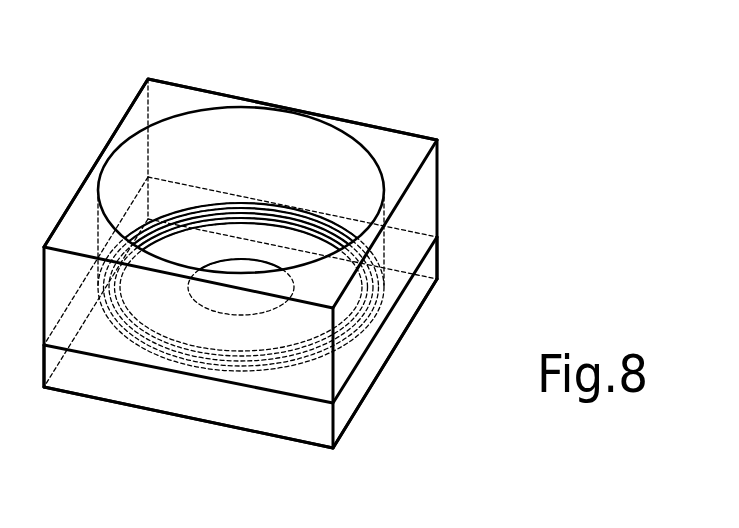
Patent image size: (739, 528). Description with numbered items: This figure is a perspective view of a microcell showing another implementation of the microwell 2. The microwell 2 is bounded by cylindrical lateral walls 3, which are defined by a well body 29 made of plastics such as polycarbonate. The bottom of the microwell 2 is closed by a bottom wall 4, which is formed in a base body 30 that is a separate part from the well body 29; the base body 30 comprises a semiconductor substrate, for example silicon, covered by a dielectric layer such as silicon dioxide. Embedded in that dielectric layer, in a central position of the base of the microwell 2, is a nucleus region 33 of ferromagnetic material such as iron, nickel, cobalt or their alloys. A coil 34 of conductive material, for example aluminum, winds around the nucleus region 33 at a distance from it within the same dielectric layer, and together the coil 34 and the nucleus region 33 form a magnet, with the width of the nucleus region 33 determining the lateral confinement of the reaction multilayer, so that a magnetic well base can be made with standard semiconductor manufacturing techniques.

The microwell 2 is at (449, 123).
The lateral walls 3 is at (374, 131).
The bottom wall 4 is at (436, 263).
The well body 29 is at (170, 100).
The base body 30 is at (410, 300).
The nucleus region 33 is at (225, 268).
The coil 34 is at (128, 234).